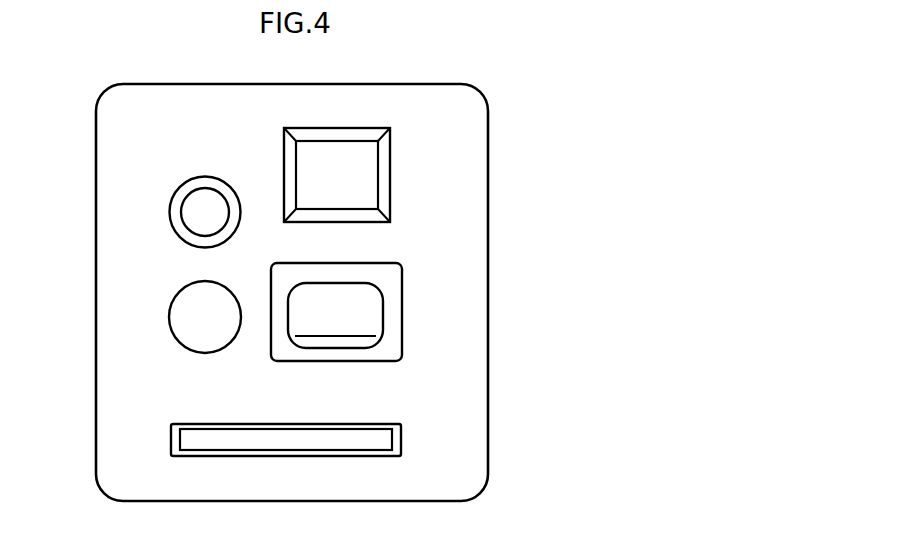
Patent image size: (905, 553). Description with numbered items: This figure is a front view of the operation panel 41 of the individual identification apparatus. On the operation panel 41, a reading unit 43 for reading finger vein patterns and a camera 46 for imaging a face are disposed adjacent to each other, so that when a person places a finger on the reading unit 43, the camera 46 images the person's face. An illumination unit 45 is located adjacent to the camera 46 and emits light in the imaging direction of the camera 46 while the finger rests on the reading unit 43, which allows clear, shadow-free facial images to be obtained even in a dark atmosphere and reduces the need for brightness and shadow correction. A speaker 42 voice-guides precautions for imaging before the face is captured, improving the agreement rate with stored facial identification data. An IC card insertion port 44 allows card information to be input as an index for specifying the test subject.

The operation panel 41 is at (496, 104).
The speaker 42 is at (367, 189).
The reading unit 43 is at (392, 320).
The IC card insertion port 44 is at (398, 438).
The illumination unit 45 is at (195, 215).
The camera 46 is at (188, 330).